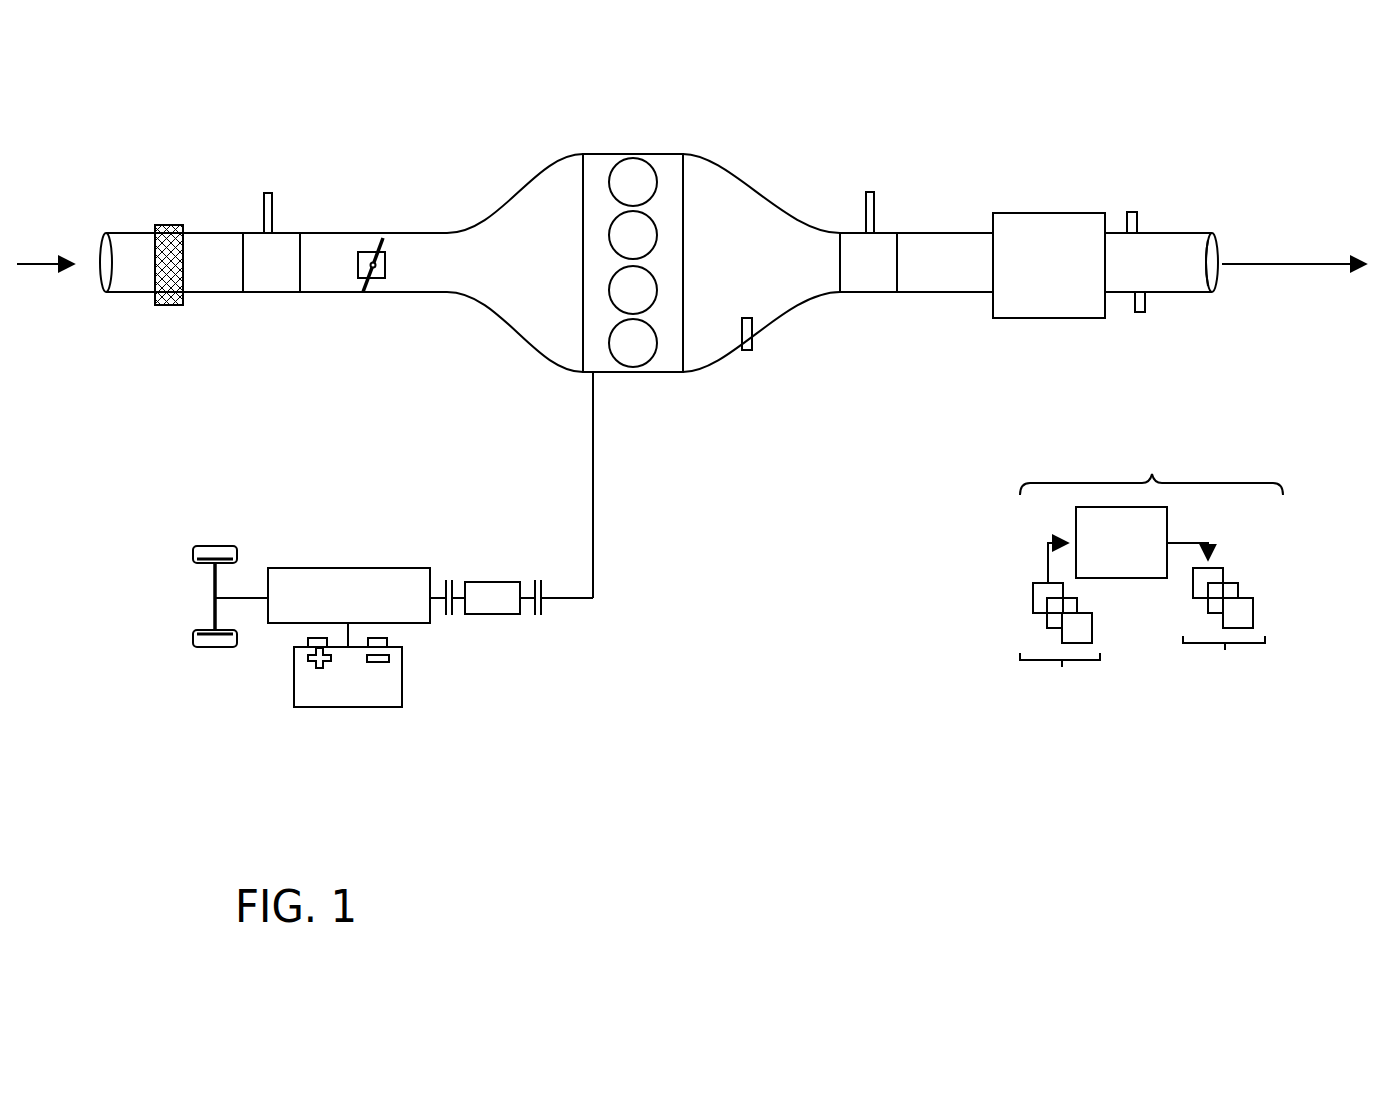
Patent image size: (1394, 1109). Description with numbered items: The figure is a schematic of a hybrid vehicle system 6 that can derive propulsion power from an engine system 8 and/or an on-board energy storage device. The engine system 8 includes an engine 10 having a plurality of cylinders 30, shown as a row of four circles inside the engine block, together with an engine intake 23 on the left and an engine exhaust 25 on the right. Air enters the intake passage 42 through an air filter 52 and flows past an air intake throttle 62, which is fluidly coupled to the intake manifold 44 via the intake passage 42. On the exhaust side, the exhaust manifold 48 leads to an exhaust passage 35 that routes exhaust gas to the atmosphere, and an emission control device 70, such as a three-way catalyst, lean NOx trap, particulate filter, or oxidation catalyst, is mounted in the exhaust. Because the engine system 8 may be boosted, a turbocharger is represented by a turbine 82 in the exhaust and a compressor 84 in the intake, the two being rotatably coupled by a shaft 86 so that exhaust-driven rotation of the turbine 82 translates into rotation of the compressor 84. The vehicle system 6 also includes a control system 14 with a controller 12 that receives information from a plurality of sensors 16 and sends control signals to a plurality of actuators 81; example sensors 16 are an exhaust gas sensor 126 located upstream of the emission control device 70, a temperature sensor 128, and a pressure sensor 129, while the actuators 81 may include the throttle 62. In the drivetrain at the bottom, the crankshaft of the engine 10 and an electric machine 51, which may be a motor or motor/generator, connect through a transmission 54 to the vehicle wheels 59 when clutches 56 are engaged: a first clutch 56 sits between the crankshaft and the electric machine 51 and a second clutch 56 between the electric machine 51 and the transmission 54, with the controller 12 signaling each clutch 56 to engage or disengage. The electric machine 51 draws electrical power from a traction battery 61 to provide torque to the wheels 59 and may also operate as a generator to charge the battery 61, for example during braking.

The hybrid vehicle system 6 is at (118, 130).
The engine system 8 is at (1244, 127).
The engine 10 is at (684, 248).
The controller 12 is at (1121, 542).
The control system 14 is at (1151, 463).
The sensors 16 is at (1060, 626).
The engine intake 23 is at (503, 180).
The engine exhaust 25 is at (800, 185).
The cylinders 30 is at (656, 178).
The exhaust passage 35 is at (1188, 232).
The intake passage 42 is at (128, 296).
The intake manifold 44 is at (515, 263).
The exhaust manifold 48 is at (761, 263).
The electric machine 51 is at (491, 615).
The air filter 52 is at (170, 224).
The transmission 54 is at (292, 625).
The clutches 56 is at (455, 582).
The vehicle wheels 59 is at (212, 648).
The traction battery 61 is at (352, 708).
The air intake throttle 62 is at (386, 267).
The emission control device 70 is at (1038, 212).
The actuators 81 is at (1217, 617).
The turbine 82 is at (868, 262).
The compressor 84 is at (271, 262).
The shaft 86 is at (273, 204).
The exhaust gas sensor 126 is at (753, 333).
The temperature sensor 128 is at (1140, 313).
The pressure sensor 129 is at (1133, 210).